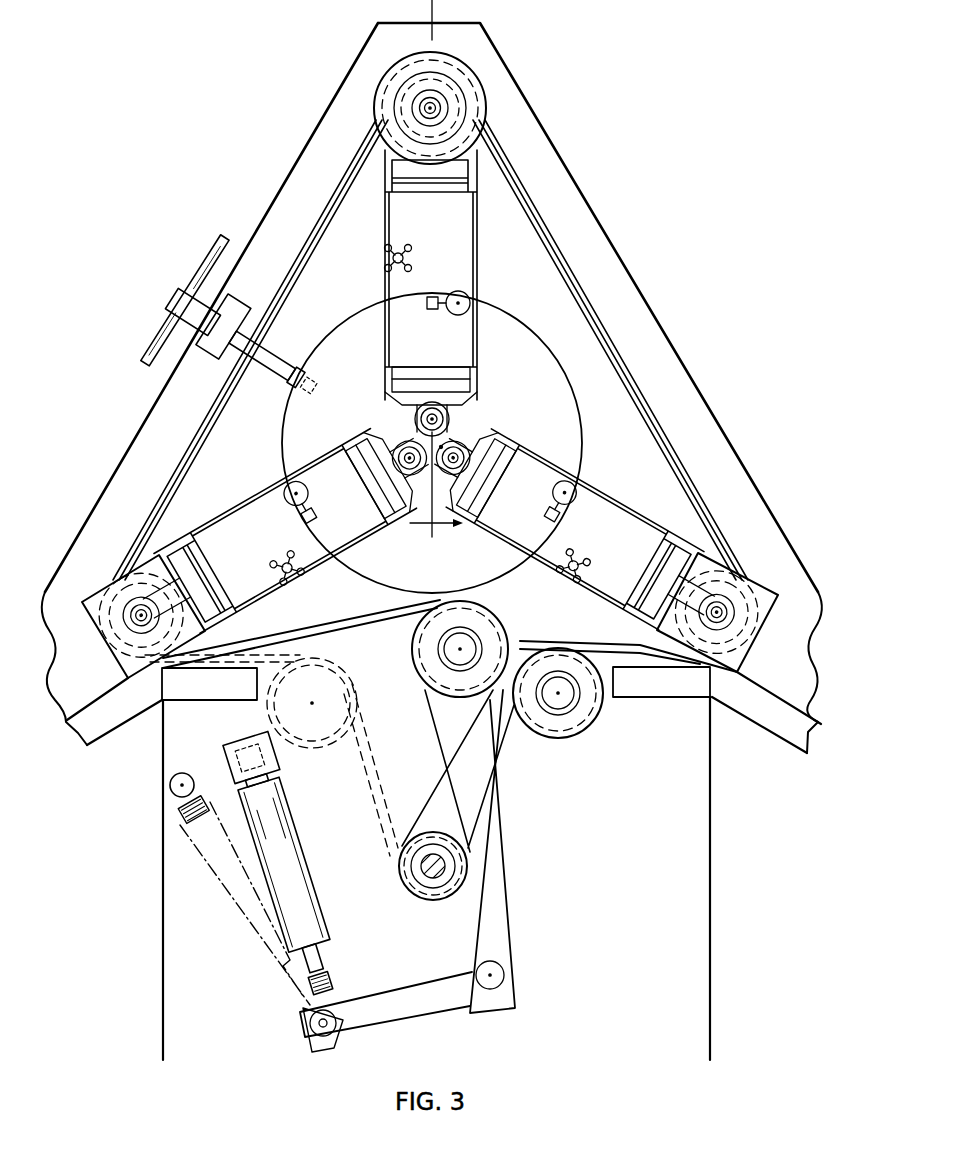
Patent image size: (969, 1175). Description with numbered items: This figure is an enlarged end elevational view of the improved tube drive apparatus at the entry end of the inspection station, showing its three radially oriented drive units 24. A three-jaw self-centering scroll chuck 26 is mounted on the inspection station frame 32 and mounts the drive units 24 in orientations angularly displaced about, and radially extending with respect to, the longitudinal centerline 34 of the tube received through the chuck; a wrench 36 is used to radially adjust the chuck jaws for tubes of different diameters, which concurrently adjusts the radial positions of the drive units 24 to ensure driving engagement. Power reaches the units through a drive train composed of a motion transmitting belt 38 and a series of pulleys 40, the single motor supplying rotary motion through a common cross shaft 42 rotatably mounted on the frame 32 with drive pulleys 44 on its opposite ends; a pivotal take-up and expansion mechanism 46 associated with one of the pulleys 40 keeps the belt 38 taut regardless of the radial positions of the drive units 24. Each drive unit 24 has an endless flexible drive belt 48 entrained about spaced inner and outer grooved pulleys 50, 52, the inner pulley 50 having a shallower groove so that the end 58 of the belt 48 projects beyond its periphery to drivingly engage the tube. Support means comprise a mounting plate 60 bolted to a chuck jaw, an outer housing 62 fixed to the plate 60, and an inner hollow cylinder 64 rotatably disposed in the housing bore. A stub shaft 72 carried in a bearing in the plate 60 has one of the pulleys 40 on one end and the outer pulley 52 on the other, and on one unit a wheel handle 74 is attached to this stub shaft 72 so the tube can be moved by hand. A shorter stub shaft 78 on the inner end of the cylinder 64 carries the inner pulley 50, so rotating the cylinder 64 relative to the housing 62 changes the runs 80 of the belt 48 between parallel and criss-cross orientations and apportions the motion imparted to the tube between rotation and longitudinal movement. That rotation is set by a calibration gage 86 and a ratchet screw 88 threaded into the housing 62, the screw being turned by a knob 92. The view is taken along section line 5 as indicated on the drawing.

The section line 5- 5 is at (436, 278).
The drive unit 24 is at (436, 440).
The three-jaw self-centering scroll chuck 26 is at (345, 334).
The inspection station frame 32 is at (712, 935).
The longitudinal centerline of the tube 34 is at (446, 447).
The wrench 36 is at (213, 240).
The motion transmitting belt 38 is at (567, 272).
The pulleys 40 is at (428, 686).
The common cross shaft 42 is at (447, 875).
The drive pulleys 44 is at (405, 888).
The pivotal take-up and expansion mechanism 46 is at (308, 838).
The drive belt 48 is at (470, 393).
The inner rotatable pulley 50 is at (428, 410).
The outer rotatable pulley 52 is at (133, 630).
The end of the drive belt 58 is at (418, 437).
The mounting plate 60 is at (648, 292).
The outer housing 62 is at (480, 200).
The inner hollow cylinder 64 is at (462, 380).
The stub shaft 72 is at (432, 108).
The wheel handle 74 is at (462, 78).
The shorter stub shaft 78 is at (437, 410).
The runs of the drive belt 80 is at (462, 404).
The calibration gage 86 is at (463, 291).
The adjustment worm gear or ratchet screw 88 is at (388, 262).
The knob 92 is at (470, 302).